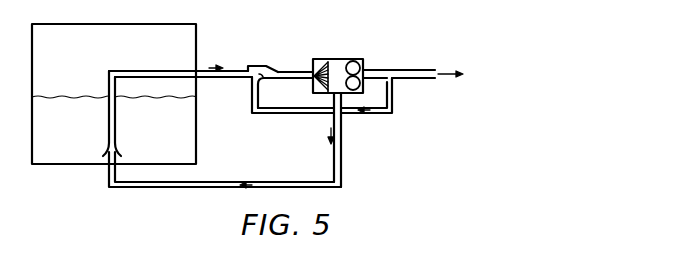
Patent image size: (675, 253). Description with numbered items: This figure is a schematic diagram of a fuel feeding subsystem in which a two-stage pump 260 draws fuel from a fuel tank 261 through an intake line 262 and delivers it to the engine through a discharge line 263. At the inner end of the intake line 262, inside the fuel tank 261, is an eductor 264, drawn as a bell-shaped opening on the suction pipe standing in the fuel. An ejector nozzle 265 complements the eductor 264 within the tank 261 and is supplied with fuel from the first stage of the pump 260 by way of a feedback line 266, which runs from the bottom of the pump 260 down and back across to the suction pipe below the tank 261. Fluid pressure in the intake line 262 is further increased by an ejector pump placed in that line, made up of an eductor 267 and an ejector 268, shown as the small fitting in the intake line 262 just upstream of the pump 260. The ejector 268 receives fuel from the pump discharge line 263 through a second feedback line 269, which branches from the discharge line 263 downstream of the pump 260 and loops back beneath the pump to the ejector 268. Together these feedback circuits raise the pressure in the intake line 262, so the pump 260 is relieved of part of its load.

The two-stage pump 260 is at (344, 59).
The fuel tank 261 is at (193, 125).
The intake line 262 is at (275, 70).
The discharge line 263 is at (413, 72).
The eductor 264 is at (118, 150).
The ejector nozzle 265 is at (104, 161).
The feedback line 266 is at (348, 132).
The eductor 267 is at (256, 63).
The ejector 268 is at (270, 82).
The second feedback line 269 is at (393, 100).